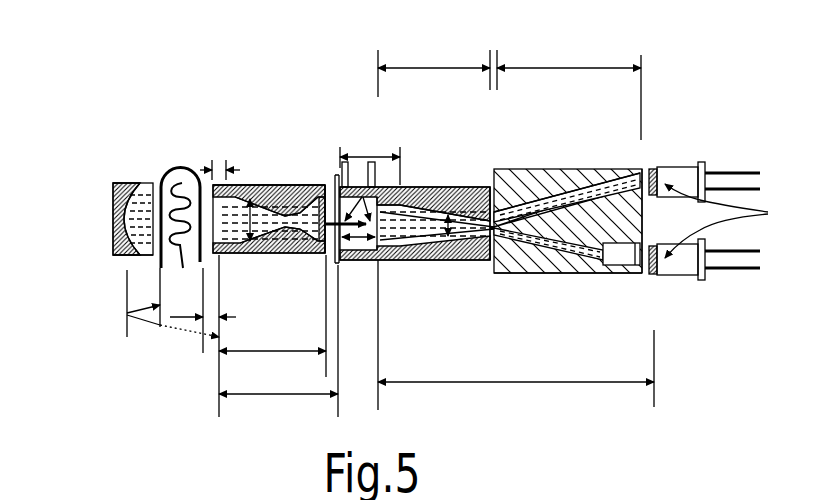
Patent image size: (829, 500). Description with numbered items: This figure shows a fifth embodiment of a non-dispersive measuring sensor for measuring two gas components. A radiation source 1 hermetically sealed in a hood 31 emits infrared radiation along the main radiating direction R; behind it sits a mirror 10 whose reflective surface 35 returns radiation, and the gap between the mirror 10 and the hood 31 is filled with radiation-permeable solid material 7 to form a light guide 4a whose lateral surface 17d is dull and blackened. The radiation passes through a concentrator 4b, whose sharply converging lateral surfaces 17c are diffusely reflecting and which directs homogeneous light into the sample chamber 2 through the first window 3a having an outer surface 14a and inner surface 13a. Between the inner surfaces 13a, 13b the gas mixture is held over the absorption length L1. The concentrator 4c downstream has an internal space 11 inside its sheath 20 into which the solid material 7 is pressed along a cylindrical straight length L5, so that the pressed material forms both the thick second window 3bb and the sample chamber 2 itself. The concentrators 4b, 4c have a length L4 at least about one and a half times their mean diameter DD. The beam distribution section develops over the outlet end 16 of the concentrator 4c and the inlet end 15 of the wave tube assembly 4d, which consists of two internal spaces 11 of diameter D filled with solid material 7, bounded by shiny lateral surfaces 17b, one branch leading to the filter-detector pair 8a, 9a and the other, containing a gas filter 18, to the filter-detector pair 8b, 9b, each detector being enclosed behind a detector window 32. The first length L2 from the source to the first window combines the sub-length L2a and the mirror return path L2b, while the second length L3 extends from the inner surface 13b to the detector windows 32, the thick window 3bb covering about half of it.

The radiation source 1 is at (188, 177).
The hood 31 is at (173, 173).
The mirror 10 is at (113, 185).
The reflective surface 35 is at (128, 236).
The lateral surface 17d is at (143, 197).
The light guide 4a is at (138, 268).
The internal space 11 is at (160, 183).
The inlet end 15 is at (209, 198).
The first window 3a is at (320, 257).
The sheath 20 is at (272, 253).
The diffusely reflecting surface 17c is at (262, 210).
The main radiating direction R is at (290, 213).
The concentrator 4b is at (250, 183).
The outer surface 14a is at (323, 182).
The mean diameter DD is at (248, 245).
The solid material 7 is at (592, 240).
The sample chamber 2 is at (338, 265).
The outlet end 16 is at (333, 180).
The thick second window 3bb is at (390, 262).
The inner surface of first window 13a is at (347, 162).
The inner surface of second window 13b is at (372, 162).
The absorption length L1 is at (348, 245).
The concentrator 4c is at (437, 212).
The wave tube assembly 4d is at (563, 169).
The diameter D is at (600, 205).
The lateral surface 17b is at (567, 273).
The gas filter 18 is at (612, 265).
The optical filter 8a is at (653, 169).
The detector 9a is at (677, 177).
The optical filter 8b is at (653, 277).
The detector 9b is at (677, 277).
The detector window 32 is at (730, 221).
The light guide length L4 is at (430, 228).
The first length L2 is at (278, 346).
The first sub-length L2a is at (201, 310).
The second sub-length L2b is at (173, 314).
The second length L3 is at (516, 338).
The cylindrical straight length L5 is at (224, 158).